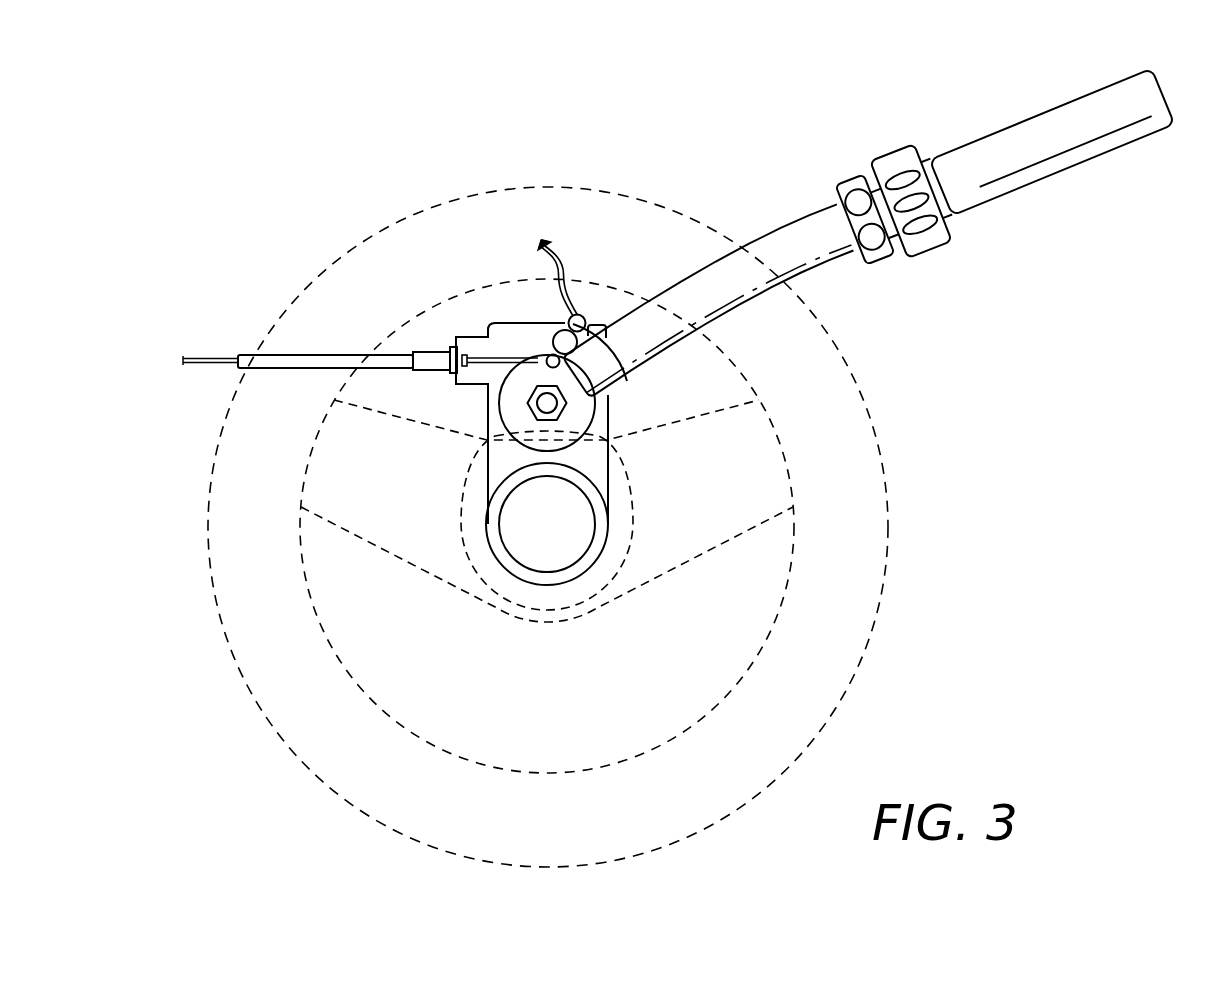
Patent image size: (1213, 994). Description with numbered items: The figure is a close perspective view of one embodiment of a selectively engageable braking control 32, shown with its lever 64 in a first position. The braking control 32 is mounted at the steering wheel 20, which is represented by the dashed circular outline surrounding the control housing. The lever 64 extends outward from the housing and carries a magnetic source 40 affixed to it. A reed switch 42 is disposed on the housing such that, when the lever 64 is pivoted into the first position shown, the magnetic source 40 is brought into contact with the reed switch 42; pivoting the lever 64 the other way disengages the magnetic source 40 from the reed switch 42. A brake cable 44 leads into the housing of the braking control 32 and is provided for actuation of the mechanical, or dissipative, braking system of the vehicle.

The steering wheel 20 is at (847, 687).
The selectively engageable braking control 32 is at (477, 306).
The magnetic source 40 is at (622, 374).
The reed switch 42 is at (578, 317).
The brake cable 44 is at (483, 364).
The lever 64 is at (781, 238).